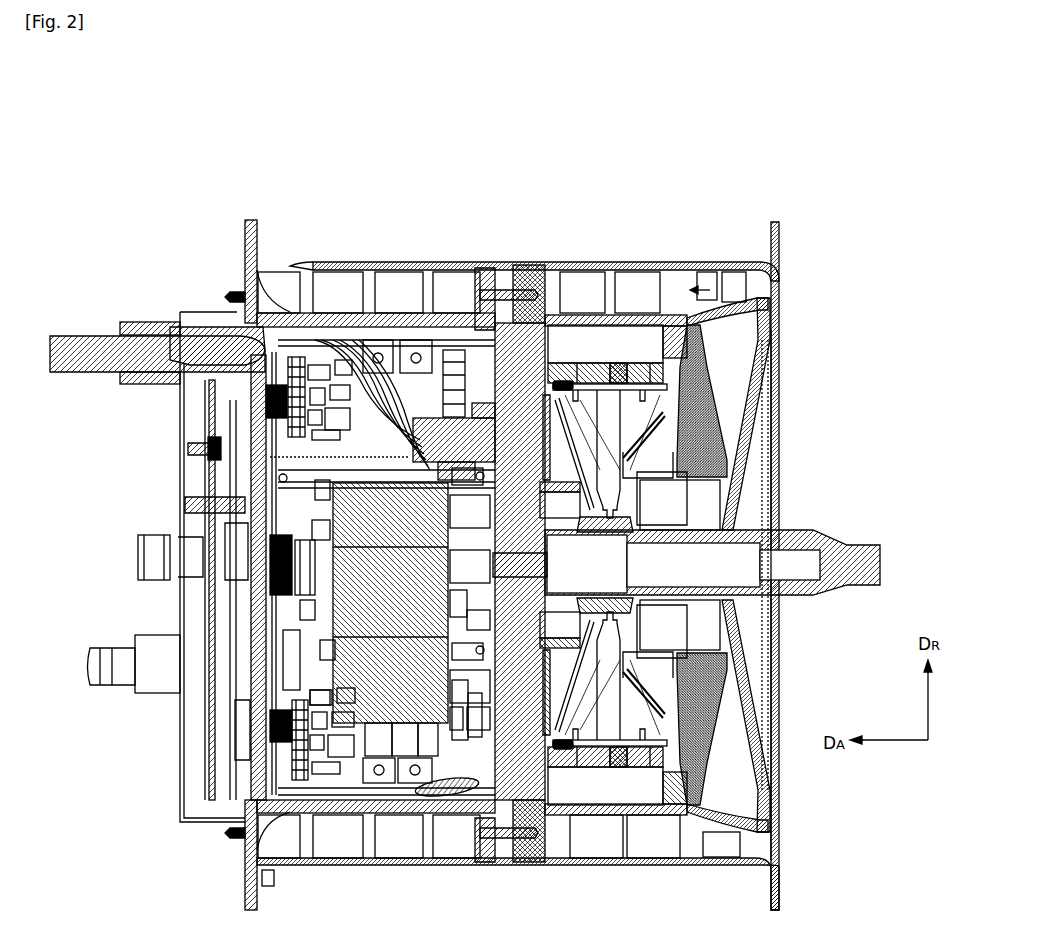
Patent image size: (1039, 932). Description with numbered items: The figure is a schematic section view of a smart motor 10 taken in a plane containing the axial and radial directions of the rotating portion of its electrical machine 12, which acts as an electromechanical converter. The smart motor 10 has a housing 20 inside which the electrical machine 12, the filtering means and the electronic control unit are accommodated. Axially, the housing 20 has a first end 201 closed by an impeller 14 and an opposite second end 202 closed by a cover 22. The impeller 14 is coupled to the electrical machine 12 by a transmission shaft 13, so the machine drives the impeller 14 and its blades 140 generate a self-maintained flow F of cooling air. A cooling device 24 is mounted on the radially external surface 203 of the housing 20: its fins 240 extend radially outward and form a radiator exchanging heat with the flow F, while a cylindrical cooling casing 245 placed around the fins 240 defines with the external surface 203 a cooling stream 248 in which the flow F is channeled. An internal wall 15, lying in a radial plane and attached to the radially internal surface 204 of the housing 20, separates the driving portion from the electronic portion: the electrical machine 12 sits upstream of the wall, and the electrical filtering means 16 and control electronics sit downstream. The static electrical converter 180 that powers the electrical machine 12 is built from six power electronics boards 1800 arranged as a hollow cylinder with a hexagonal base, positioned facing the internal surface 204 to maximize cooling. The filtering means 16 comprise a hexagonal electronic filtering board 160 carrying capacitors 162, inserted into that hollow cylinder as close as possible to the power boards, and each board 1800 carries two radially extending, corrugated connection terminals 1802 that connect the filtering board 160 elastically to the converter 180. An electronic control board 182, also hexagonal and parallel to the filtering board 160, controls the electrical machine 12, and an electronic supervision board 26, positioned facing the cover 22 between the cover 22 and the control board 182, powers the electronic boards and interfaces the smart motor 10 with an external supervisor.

The smart motor 10 is at (80, 277).
The electrical machine 12 is at (590, 365).
The transmission shaft 13 is at (800, 553).
The impeller 14 is at (765, 295).
The blades 140 is at (708, 288).
The internal wall 15 is at (528, 268).
The electrical filtering means 16 is at (393, 770).
The electronic filtering board 160 is at (440, 735).
The capacitors 162 is at (338, 812).
The flow of air F is at (700, 278).
The housing 20 is at (240, 858).
The first end 201 is at (798, 406).
The second end 202 is at (164, 422).
The radially external surface 203 is at (306, 312).
The radially internal surface 204 is at (292, 345).
The cover 22 is at (178, 452).
The cooling device 24 is at (482, 282).
The fins 240 is at (655, 832).
The cooling casing 245 is at (476, 855).
The cooling stream 248 is at (692, 835).
The electronic supervision board 26 is at (208, 513).
The static electrical converter 180 is at (285, 462).
The power electronics boards 1800 is at (366, 345).
The connection terminals 1802 is at (447, 360).
The electronic control board 182 is at (240, 757).